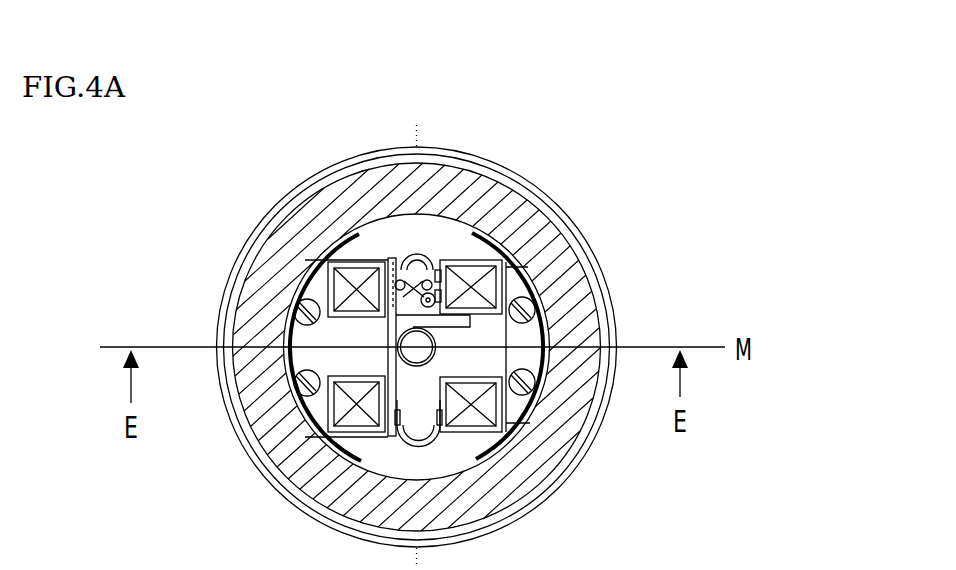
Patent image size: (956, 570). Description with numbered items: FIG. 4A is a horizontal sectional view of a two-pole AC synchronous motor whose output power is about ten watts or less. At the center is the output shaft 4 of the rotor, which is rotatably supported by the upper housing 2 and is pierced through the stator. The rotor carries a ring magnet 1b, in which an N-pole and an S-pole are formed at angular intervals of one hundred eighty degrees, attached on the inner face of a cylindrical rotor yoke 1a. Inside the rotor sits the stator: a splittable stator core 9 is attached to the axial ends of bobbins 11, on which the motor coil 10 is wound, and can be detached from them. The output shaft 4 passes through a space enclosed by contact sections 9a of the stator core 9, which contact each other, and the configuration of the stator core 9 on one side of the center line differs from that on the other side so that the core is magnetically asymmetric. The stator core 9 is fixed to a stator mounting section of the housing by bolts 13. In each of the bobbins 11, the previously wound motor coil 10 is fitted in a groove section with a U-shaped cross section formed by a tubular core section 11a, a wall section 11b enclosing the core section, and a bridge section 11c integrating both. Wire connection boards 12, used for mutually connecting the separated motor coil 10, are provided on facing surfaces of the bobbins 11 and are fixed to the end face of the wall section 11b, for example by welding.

The rotor yoke 1a is at (317, 180).
The ring magnet 1b is at (373, 190).
The upper housing 2 is at (230, 277).
The output shaft 4 is at (433, 342).
The stator core 9 is at (518, 287).
The contact sections 9a is at (380, 388).
The motor coil 10 is at (477, 277).
The bobbins 11 is at (427, 437).
The core section 11a is at (445, 257).
The wall section 11b is at (457, 257).
The bridge section 11c is at (510, 400).
The wire connection boards 12 is at (397, 400).
The bolts 13 is at (310, 300).